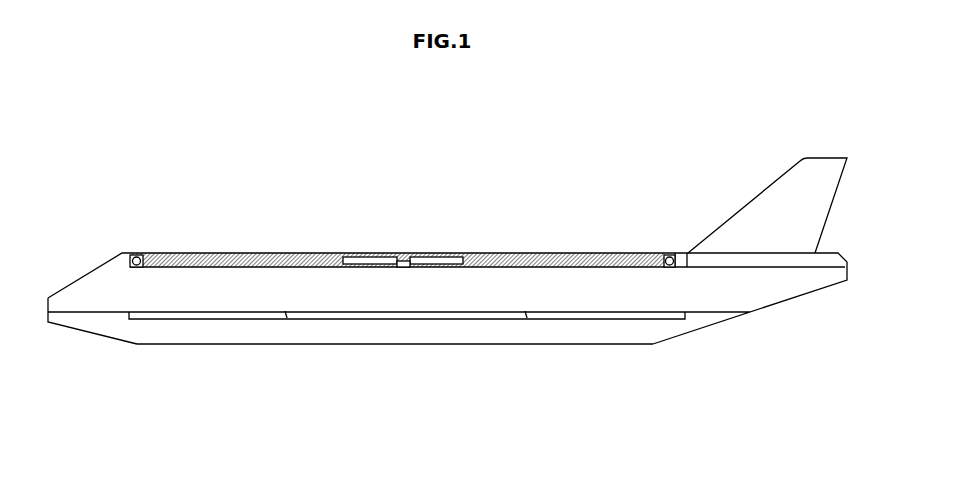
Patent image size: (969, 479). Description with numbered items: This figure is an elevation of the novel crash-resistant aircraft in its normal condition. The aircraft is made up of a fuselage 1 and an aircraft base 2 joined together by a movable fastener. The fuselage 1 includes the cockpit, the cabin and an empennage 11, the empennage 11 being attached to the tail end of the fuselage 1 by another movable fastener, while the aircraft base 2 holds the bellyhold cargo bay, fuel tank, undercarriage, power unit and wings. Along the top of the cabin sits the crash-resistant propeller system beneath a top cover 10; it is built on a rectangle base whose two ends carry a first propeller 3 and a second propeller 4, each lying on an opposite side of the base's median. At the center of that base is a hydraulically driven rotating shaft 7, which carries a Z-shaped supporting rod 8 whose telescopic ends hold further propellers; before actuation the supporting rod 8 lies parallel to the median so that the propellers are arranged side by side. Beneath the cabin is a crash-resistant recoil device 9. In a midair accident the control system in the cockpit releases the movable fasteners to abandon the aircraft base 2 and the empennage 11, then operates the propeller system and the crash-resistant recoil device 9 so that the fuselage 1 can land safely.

The fuselage 1 is at (102, 282).
The aircraft base 2 is at (437, 333).
The first propeller 3 is at (142, 260).
The second propeller 4 is at (665, 258).
The rotating shaft 7 is at (402, 265).
The supporting rod 8 is at (438, 260).
The crash-resistant recoil device 9 is at (240, 317).
The top cover 10 is at (358, 255).
The empennage 11 is at (777, 203).